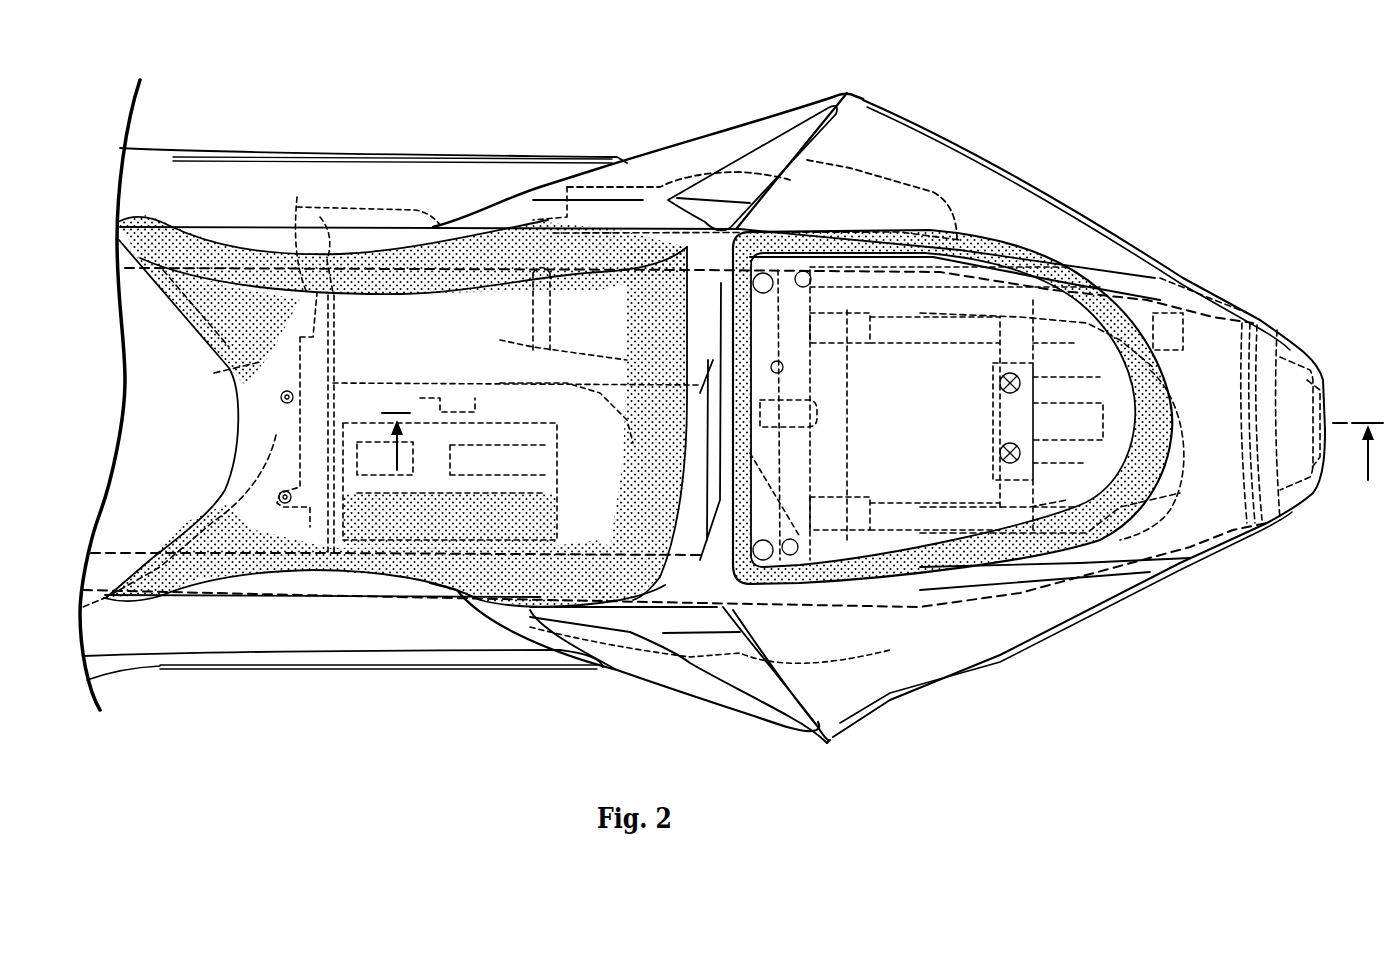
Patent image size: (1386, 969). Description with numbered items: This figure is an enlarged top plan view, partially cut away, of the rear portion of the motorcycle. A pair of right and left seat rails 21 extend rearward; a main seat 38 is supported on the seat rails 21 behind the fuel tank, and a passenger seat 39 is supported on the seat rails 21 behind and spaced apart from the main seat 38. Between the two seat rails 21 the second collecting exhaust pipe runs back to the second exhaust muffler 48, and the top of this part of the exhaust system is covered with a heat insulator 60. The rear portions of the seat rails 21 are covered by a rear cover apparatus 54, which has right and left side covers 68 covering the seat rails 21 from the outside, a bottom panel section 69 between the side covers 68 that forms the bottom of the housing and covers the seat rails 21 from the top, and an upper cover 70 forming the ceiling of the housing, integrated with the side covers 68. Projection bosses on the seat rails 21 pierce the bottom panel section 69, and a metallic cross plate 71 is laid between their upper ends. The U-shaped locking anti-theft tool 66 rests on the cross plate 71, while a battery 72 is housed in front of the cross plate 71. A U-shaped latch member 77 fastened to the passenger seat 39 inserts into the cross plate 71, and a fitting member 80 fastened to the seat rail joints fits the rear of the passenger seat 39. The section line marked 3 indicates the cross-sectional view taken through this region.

The seat rail 21 is at (240, 240).
The main seat 38 is at (453, 293).
The bottom panel section 69 is at (229, 368).
The battery 72 is at (430, 590).
The section line 3- 3 is at (882, 427).
The rear cover apparatus 54 is at (863, 92).
The side cover 68 is at (910, 117).
The passenger seat 39 is at (947, 303).
The U-shaped locking anti-theft tool 66 is at (1055, 300).
The heat insulator 60 is at (1117, 333).
The fitting member 80 is at (1187, 310).
The second exhaust muffler 48 is at (1278, 332).
The upper cover 70 is at (1217, 507).
The latch member 77 is at (800, 387).
The cross plate 71 is at (807, 430).